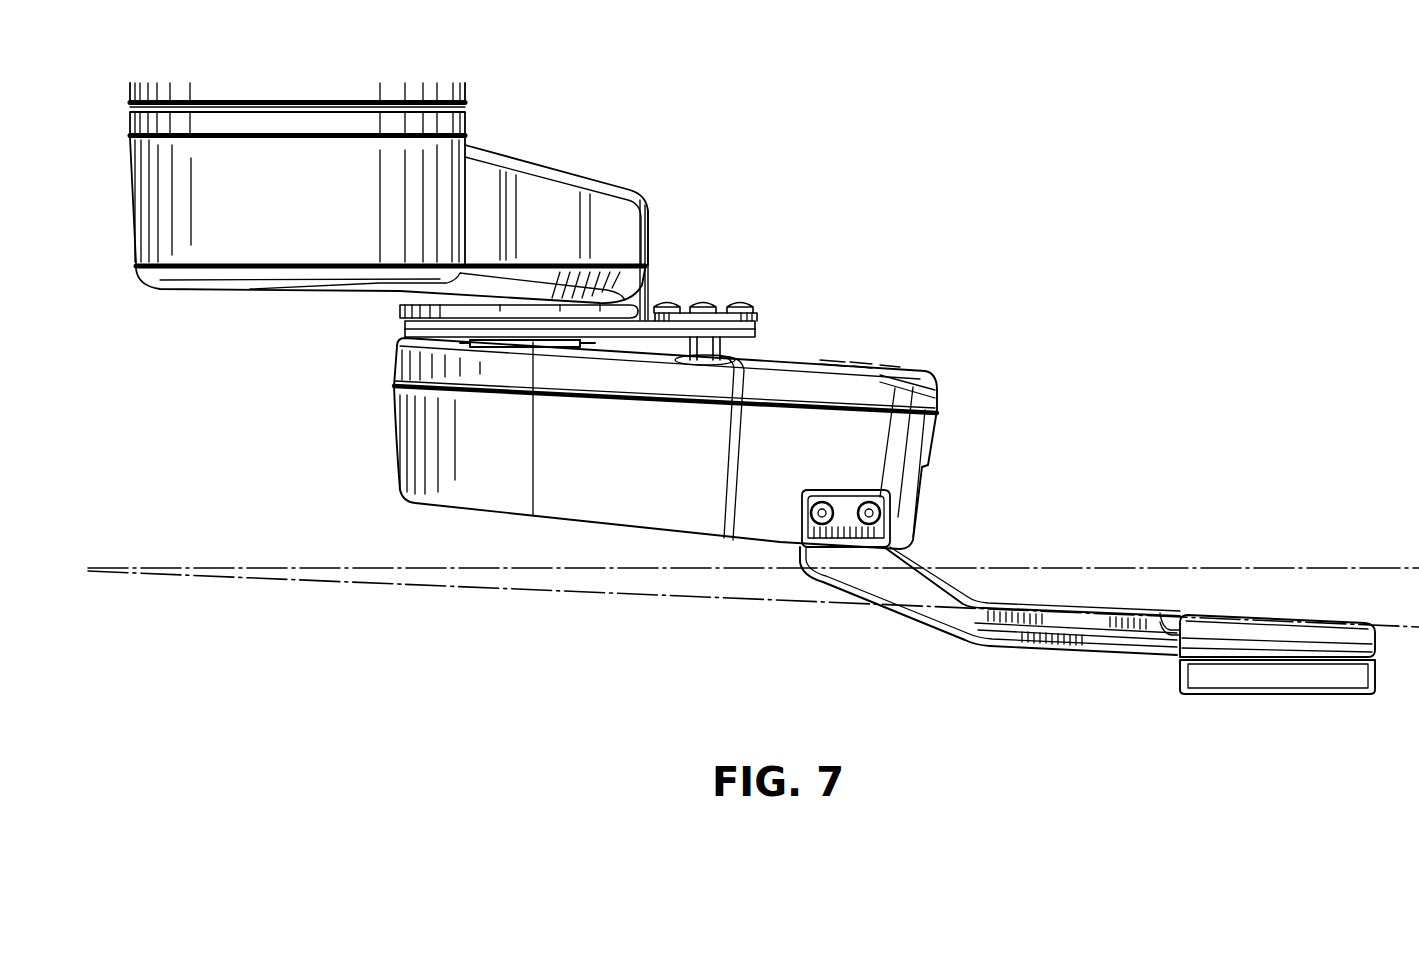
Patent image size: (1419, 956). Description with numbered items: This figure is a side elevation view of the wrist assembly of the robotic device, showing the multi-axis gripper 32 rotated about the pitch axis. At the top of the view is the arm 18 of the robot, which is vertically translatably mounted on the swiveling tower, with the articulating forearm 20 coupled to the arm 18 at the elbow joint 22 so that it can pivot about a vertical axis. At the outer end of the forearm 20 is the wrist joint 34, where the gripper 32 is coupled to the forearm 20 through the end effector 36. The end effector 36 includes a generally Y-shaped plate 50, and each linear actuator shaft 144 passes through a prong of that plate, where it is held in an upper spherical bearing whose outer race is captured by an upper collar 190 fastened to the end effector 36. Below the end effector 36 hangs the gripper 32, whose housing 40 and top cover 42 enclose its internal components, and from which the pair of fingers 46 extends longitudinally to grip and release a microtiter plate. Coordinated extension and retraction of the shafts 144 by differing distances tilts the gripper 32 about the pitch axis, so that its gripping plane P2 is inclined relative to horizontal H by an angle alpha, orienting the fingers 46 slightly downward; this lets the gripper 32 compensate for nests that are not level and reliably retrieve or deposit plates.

The arm 18 is at (130, 90).
The elbow joint 22 is at (115, 115).
The articulating forearm 20 is at (545, 162).
The wrist joint 34 is at (396, 314).
The end effector 36 is at (758, 329).
The upper collar 190 is at (756, 315).
The shaft 144 is at (688, 340).
The Y-shaped plate 50 is at (410, 331).
The housing 40 is at (402, 466).
The top cover 42 is at (910, 374).
The multi-axis gripper 32 is at (1008, 370).
The fingers 46 is at (955, 592).
The horizontal H is at (1310, 568).
The gripping plane P2 is at (1308, 620).